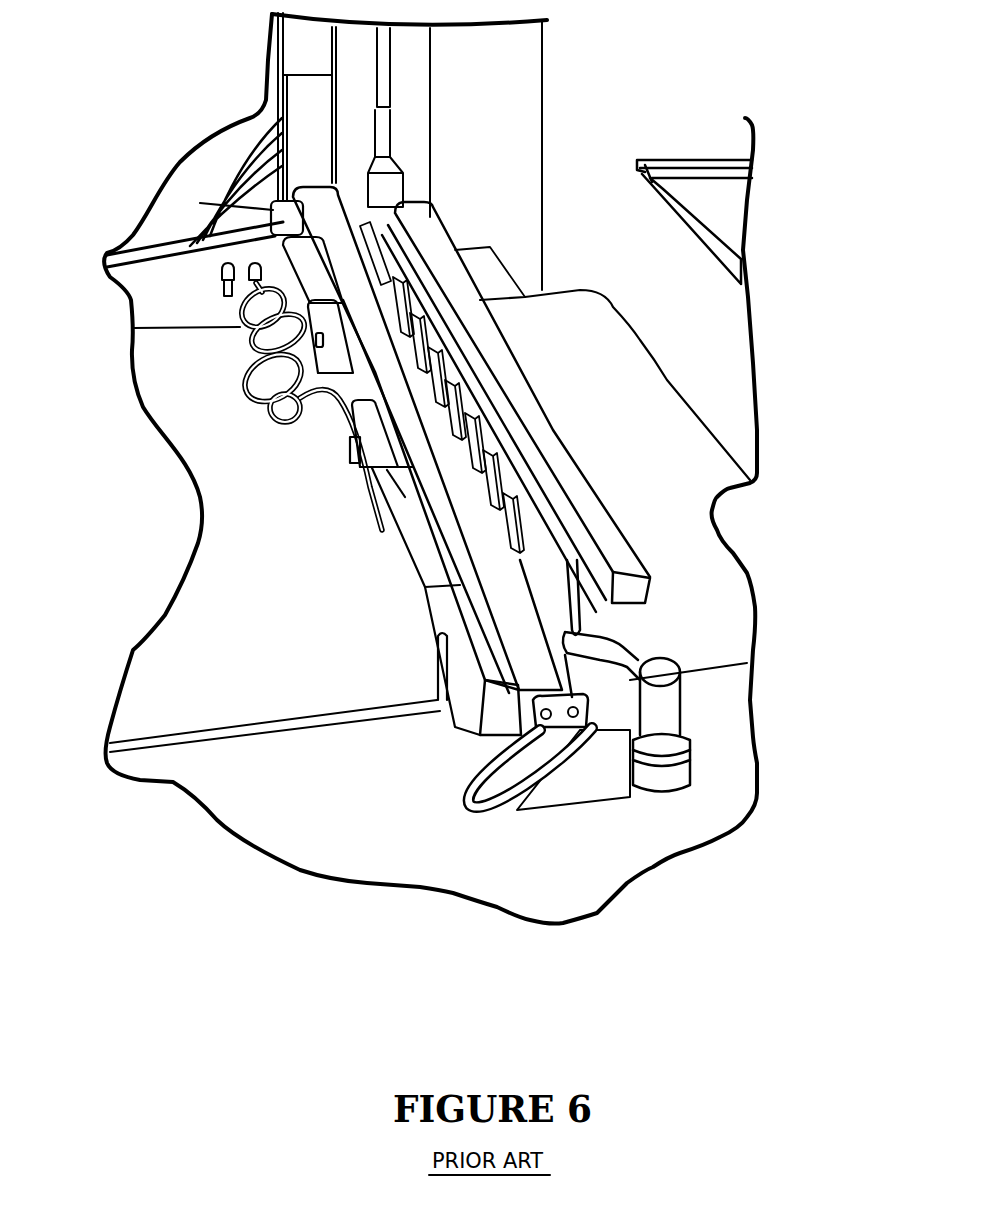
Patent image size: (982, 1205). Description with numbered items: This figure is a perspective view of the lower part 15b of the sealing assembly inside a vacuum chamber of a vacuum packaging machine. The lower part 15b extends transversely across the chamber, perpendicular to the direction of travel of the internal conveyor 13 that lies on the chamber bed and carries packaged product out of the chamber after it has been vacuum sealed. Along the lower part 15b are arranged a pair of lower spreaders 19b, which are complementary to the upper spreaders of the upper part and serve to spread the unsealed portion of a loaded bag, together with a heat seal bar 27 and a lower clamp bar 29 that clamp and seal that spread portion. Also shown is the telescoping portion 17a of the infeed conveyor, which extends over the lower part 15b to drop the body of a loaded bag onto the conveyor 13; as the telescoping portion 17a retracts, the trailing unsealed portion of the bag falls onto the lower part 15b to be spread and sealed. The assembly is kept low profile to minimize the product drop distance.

The internal conveyor 13 is at (690, 545).
The lower part of the sealing assembly 15b is at (566, 414).
The telescoping portion of the infeed conveyor 17a is at (730, 207).
The lower spreaders 19b is at (268, 240).
The heat seal bar 27 is at (575, 724).
The lower clamp bar 29 is at (645, 590).